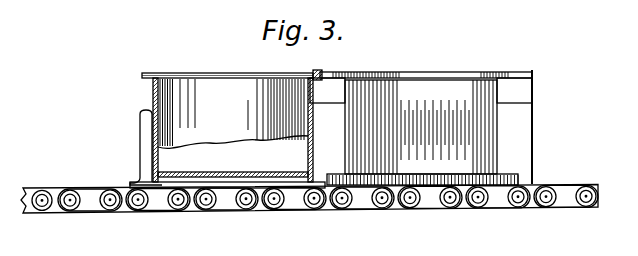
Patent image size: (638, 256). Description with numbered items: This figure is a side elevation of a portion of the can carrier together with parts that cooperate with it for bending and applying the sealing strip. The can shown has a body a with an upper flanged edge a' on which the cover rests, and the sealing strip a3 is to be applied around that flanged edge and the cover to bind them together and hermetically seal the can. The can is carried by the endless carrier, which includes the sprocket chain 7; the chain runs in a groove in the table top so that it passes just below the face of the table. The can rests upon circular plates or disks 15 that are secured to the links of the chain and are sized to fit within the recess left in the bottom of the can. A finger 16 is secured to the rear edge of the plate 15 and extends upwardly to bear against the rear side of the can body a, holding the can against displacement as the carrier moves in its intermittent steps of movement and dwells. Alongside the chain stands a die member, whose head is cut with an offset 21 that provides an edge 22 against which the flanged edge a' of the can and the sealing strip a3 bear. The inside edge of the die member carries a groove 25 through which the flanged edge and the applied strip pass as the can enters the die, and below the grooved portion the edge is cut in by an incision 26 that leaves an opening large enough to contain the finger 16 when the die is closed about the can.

The body of the can a is at (191, 125).
The upper flanged edge a' is at (141, 104).
The sealing strip a3 is at (315, 72).
The sprocket chain 7 is at (90, 206).
The circular plates or disks 15 is at (228, 180).
The fingers 16 is at (140, 144).
The offset 21 is at (415, 104).
The edge 22 is at (485, 74).
The groove 25 is at (337, 73).
The incisions 26 is at (515, 138).